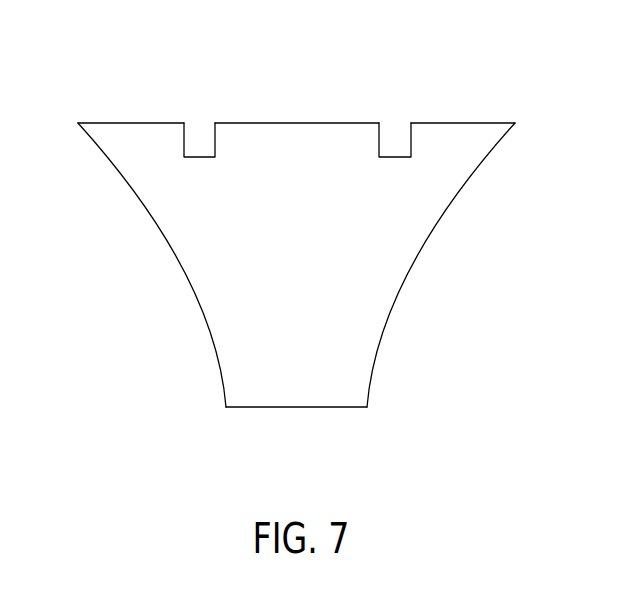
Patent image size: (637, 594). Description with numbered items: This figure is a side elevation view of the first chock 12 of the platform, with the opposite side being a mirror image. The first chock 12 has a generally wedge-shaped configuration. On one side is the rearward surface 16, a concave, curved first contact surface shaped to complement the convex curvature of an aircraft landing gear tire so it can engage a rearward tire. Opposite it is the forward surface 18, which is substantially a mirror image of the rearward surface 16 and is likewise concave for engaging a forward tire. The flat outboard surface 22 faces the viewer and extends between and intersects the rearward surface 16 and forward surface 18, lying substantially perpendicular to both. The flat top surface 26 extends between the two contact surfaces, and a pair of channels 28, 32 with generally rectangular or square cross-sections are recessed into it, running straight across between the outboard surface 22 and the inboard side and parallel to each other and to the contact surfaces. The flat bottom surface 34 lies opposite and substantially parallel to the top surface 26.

The first chock 12 is at (282, 259).
The rearward surface 16 is at (157, 222).
The forward surface 18 is at (432, 228).
The outboard surface 22 is at (240, 331).
The top surface 26 is at (302, 123).
The channel 28 is at (198, 128).
The channel 32 is at (396, 128).
The bottom surface 34 is at (295, 407).